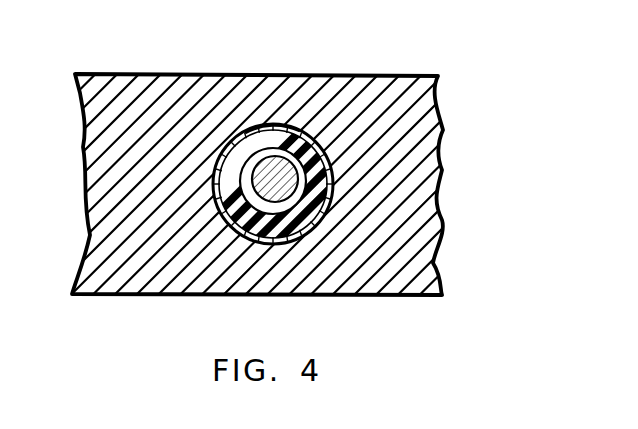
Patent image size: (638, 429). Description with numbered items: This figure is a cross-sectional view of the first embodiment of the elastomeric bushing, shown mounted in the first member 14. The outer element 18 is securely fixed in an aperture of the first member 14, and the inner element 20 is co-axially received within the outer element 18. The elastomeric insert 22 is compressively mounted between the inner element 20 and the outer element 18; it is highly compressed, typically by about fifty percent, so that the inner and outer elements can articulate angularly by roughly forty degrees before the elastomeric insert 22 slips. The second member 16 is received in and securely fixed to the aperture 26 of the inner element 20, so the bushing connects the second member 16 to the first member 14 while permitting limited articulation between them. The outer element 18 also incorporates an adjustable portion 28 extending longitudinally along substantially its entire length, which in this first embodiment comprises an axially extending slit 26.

The first member 14 is at (403, 230).
The second member 16 is at (236, 136).
The outer element 18 is at (333, 192).
The inner element 20 is at (303, 133).
The elastomeric insert 22 is at (304, 172).
The axially extending slit 26 is at (268, 128).
The adjustable portion 28 is at (278, 101).